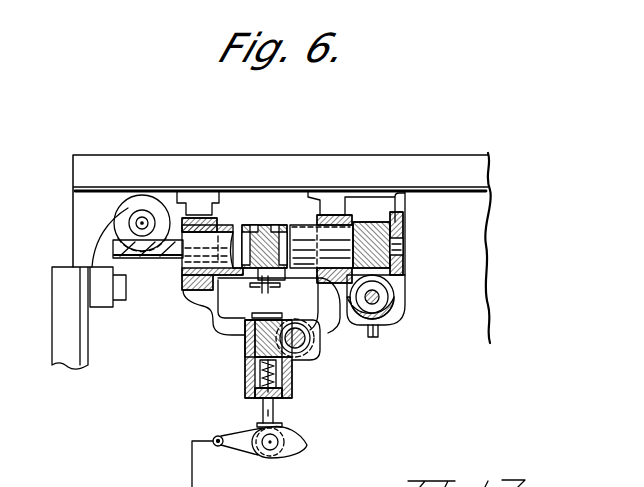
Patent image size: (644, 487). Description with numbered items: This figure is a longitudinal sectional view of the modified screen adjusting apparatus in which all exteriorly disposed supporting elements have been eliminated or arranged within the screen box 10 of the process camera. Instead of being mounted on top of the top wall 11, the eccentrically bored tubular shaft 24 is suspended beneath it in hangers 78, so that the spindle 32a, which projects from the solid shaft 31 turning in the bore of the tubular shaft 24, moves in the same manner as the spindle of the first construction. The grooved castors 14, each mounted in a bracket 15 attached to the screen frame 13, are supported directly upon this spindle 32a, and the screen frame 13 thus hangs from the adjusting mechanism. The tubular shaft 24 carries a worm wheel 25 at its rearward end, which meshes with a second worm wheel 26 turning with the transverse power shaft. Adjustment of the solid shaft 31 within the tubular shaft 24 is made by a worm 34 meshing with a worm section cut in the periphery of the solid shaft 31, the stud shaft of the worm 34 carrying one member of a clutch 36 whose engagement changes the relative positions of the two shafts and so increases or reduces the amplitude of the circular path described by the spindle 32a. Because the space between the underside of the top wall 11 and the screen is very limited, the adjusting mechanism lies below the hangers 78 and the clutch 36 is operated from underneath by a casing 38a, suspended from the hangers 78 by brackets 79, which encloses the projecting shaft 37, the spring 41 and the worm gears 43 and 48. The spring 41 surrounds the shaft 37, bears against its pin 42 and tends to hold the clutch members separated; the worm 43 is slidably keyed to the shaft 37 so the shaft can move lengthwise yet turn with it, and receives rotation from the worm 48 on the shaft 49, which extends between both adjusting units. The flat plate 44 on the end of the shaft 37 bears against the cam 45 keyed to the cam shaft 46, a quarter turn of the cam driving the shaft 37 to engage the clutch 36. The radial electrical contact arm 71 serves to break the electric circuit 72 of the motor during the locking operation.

The screen box 10 is at (492, 222).
The top wall 11 is at (292, 161).
The screen frame 13 is at (68, 307).
The grooved castor 14 is at (118, 210).
The bracket 15 is at (100, 246).
The tubular shaft 24 is at (300, 227).
The worm wheel 25 is at (404, 232).
The second worm wheel 26 is at (394, 299).
The solid shaft 31 is at (222, 238).
The spindle 32a is at (176, 256).
The worm 34 is at (268, 230).
The clutch 36 is at (281, 316).
The projecting shaft 37 is at (282, 406).
The casing 38a is at (296, 378).
The spring 41 is at (258, 378).
The pin 42 is at (252, 394).
The worm 43 is at (243, 342).
The flat plate 44 is at (256, 427).
The cam 45 is at (300, 440).
The cam shaft 46 is at (268, 450).
The worm 48 is at (307, 340).
The shaft 49 is at (300, 326).
The electrical contact arm 71 is at (217, 447).
The electric circuit 72 is at (191, 471).
The hanger 78 is at (196, 195).
The bracket 79 is at (207, 311).